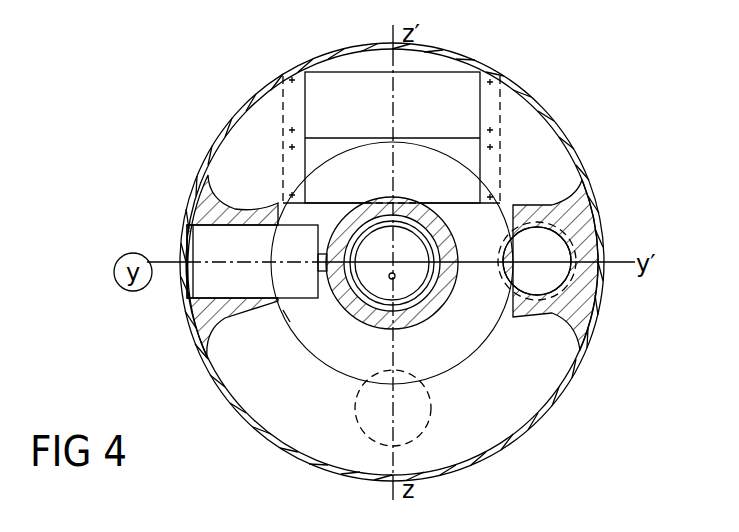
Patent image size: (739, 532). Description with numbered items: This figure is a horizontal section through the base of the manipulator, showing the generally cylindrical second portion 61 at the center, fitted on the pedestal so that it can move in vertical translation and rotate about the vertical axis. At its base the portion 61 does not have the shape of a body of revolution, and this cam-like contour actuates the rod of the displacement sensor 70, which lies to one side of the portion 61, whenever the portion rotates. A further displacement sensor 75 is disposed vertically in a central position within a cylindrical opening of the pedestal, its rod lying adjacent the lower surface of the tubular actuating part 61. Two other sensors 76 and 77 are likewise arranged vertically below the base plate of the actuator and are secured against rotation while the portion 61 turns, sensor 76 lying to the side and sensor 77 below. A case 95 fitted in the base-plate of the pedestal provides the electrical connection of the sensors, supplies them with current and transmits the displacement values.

The second portion of the manipulator 61 is at (440, 303).
The displacement sensor 70 is at (217, 265).
The displacement sensor 75 is at (383, 240).
The sensor 76 is at (548, 278).
The sensor 77 is at (408, 432).
The case 95 is at (440, 110).